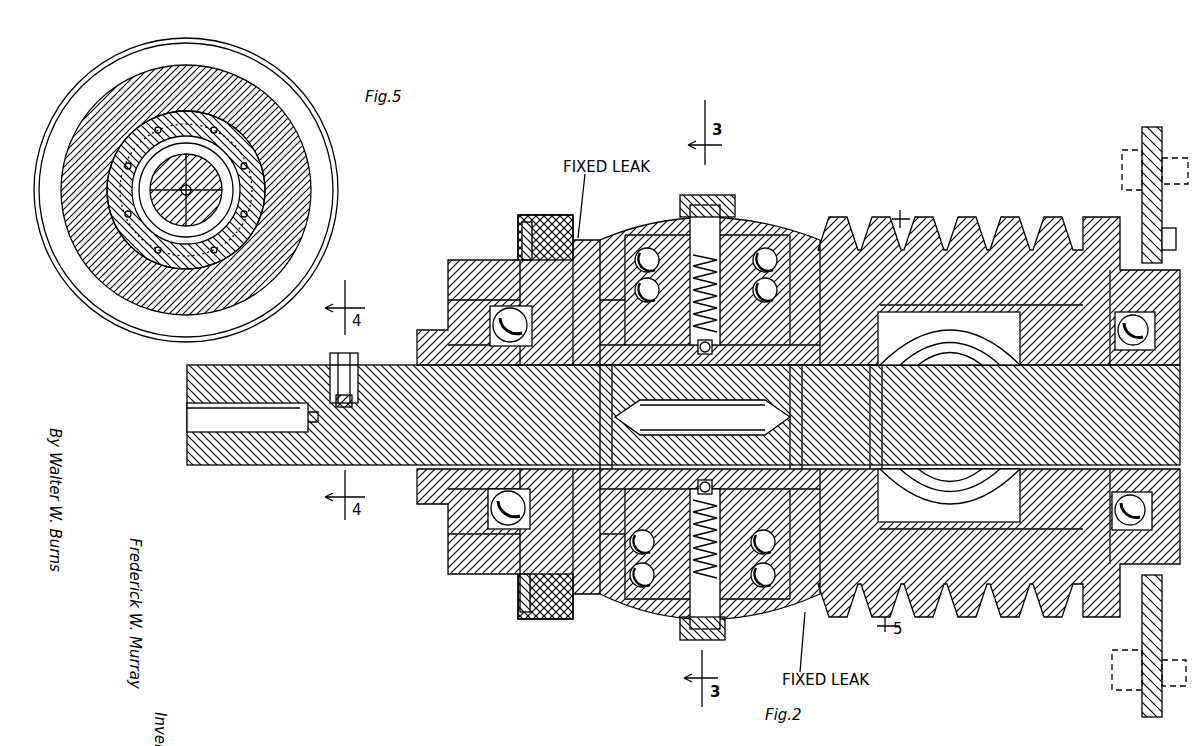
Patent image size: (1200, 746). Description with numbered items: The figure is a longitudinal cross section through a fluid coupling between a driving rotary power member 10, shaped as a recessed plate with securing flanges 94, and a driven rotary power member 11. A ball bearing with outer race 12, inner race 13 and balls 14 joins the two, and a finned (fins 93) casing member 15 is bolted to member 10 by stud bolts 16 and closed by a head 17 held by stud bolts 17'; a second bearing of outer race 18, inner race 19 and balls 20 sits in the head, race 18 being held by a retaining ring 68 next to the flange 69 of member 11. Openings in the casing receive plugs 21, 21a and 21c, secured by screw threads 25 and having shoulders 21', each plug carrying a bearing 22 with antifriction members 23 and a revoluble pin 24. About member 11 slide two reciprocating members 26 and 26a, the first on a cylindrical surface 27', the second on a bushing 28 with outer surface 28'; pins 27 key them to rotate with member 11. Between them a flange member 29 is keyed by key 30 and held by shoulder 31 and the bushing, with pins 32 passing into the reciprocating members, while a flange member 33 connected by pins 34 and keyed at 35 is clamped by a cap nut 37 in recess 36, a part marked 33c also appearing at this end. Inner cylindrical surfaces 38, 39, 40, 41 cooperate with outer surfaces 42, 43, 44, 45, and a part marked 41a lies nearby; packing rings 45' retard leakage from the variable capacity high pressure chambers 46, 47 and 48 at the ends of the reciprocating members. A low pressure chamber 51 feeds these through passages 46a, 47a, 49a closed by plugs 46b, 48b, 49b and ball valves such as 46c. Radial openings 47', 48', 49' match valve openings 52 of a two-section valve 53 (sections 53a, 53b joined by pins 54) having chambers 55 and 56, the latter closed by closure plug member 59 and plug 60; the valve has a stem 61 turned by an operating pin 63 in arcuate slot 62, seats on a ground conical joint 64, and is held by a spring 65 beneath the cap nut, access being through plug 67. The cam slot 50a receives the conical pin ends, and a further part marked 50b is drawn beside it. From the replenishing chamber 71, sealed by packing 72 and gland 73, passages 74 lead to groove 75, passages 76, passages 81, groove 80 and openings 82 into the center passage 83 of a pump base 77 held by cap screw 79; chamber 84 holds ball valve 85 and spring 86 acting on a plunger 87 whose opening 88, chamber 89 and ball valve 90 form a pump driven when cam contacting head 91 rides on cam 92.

In FIG. 2, the rotary power member 10 is at (1160, 372).
In FIG. 5, the rotary power member 11 is at (240, 142).
In FIG. 2, the rotary power member 11 is at (192, 374).
In FIG. 2, the outer race 12 is at (1158, 320).
In FIG. 2, the inner race 13 is at (1160, 356).
In FIG. 2, the balls 14 is at (1160, 338).
In FIG. 5, the casing member 15 is at (287, 158).
In FIG. 2, the casing member 15 is at (520, 240).
In FIG. 2, the stud bolts 16 is at (1156, 260).
In FIG. 2, the head 17 is at (425, 265).
In FIG. 2, the stud bolts 17' is at (509, 422).
In FIG. 2, the outer race 18 is at (775, 230).
In FIG. 2, the inner race 19 is at (450, 325).
In FIG. 2, the balls 20 is at (470, 300).
In FIG. 2, the plug 21 is at (773, 190).
In FIG. 2, the shoulders 21' is at (867, 213).
In FIG. 2, the plug 21a is at (665, 625).
In FIG. 2, the plug 21c is at (1000, 340).
In FIG. 2, the bearings 22 is at (790, 250).
In FIG. 2, the antifriction members 23 is at (790, 250).
In FIG. 2, the revoluble pins 24 is at (755, 620).
In FIG. 2, the screw threads 25 is at (905, 235).
In FIG. 2, the reciprocating member 26 is at (580, 300).
In FIG. 5, the reciprocating member 26a is at (253, 193).
In FIG. 2, the reciprocating member 26a is at (975, 228).
In FIG. 2, the pins 27 is at (545, 423).
In FIG. 2, the cylindrical surface 27' is at (747, 412).
In FIG. 5, the bushing 28 is at (311, 247).
In FIG. 2, the bushing 28 is at (960, 440).
In FIG. 2, the outer cylindrical surface 28' is at (927, 430).
In FIG. 2, the flange member 29 is at (845, 610).
In FIG. 2, the key 30 is at (765, 429).
In FIG. 2, the shoulder 31 is at (745, 450).
In FIG. 5, the pins 32 is at (277, 223).
In FIG. 2, the pins 32 is at (940, 240).
In FIG. 2, the flange member 33 is at (1160, 404).
In FIG. 2, the nut 33c is at (1181, 238).
In FIG. 2, the pins 34 is at (1080, 330).
In FIG. 2, the key connection 35 is at (1017, 419).
In FIG. 2, the recess 36 is at (1185, 426).
In FIG. 2, the cap nut 37 is at (1160, 470).
In FIG. 2, the cylindrical surface 38 is at (608, 635).
In FIG. 2, the cylindrical surface 39 is at (740, 305).
In FIG. 2, the cylindrical surface 40 is at (1025, 312).
In FIG. 2, the cylindrical surface 41 is at (1029, 332).
In FIG. 2, the sleeve 41a is at (745, 380).
In FIG. 2, the cylindrical surface 42 is at (545, 670).
In FIG. 2, the cylindrical surface 43 is at (829, 433).
In FIG. 2, the cylindrical surface 44 is at (949, 417).
In FIG. 2, the cylindrical surface 45 is at (935, 322).
In FIG. 2, the packing rings 45' is at (978, 419).
In FIG. 2, the high pressure chamber 46 is at (738, 374).
In FIG. 2, the communicating passage 46a is at (864, 388).
In FIG. 2, the plug 46b is at (597, 380).
In FIG. 2, the ball valve 46c is at (566, 380).
In FIG. 2, the high pressure chamber 47 is at (825, 369).
In FIG. 2, the openings 47' is at (817, 450).
In FIG. 2, the communicating passage 47a is at (795, 327).
In FIG. 2, the high pressure chamber 48 is at (1035, 405).
In FIG. 5, the openings 48' is at (158, 278).
In FIG. 2, the plug 48b is at (915, 500).
In FIG. 2, the openings 49' is at (992, 415).
In FIG. 2, the communicating passage 49a is at (1077, 419).
In FIG. 2, the plug 49b is at (1066, 397).
In FIG. 2, the cam slot 50a is at (1007, 520).
In FIG. 2, the chamber 50b is at (980, 548).
In FIG. 5, the low pressure chamber 51 is at (253, 173).
In FIG. 2, the low pressure chamber 51 is at (805, 287).
In FIG. 2, the valve openings 52 is at (665, 450).
In FIG. 2, the valve 53 is at (627, 440).
In FIG. 2, the valve section 53a is at (582, 450).
In FIG. 2, the valve section 53b is at (735, 433).
In FIG. 2, the pins 54 is at (525, 438).
In FIG. 2, the chamber 55 is at (682, 429).
In FIG. 2, the chamber 56 is at (960, 418).
In FIG. 2, the closure plug member 59 is at (992, 445).
In FIG. 2, the plug 60 is at (1106, 439).
In FIG. 5, the stem 61 is at (213, 173).
In FIG. 2, the stem 61 is at (365, 420).
In FIG. 2, the arcuate slot 62 is at (338, 385).
In FIG. 2, the operating pin 63 is at (348, 364).
In FIG. 2, the ground conical joint 64 is at (555, 412).
In FIG. 2, the spring 65 is at (1185, 490).
In FIG. 2, the plug 67 is at (1185, 438).
In FIG. 2, the retaining ring 68 is at (525, 550).
In FIG. 2, the flange 69 is at (510, 404).
In FIG. 2, the outer replenishing chamber 71 is at (480, 300).
In FIG. 2, the packing 72 is at (470, 283).
In FIG. 2, the gland 73 is at (470, 262).
In FIG. 2, the passages 74 is at (528, 262).
In FIG. 2, the groove 75 is at (590, 270).
In FIG. 2, the passages 76 is at (625, 240).
In FIG. 2, the pump base 77 is at (730, 215).
In FIG. 2, the cap screw 79 is at (700, 210).
In FIG. 2, the groove 80 is at (715, 568).
In FIG. 2, the passages 81 is at (668, 240).
In FIG. 2, the openings 82 is at (695, 640).
In FIG. 2, the center passage 83 is at (748, 417).
In FIG. 2, the chamber 84 is at (663, 260).
In FIG. 2, the ball valve 85 is at (660, 286).
In FIG. 2, the spring 86 is at (753, 413).
In FIG. 2, the plunger 87 is at (740, 322).
In FIG. 2, the opening 88 is at (652, 545).
In FIG. 2, the chamber 89 is at (744, 335).
In FIG. 2, the ball valve 90 is at (702, 412).
In FIG. 2, the cam contacting head 91 is at (705, 450).
In FIG. 2, the cam 92 is at (685, 380).
In FIG. 5, the fins 93 is at (298, 104).
In FIG. 2, the fins 93 is at (975, 610).
In FIG. 2, the flanges 94 is at (1142, 695).